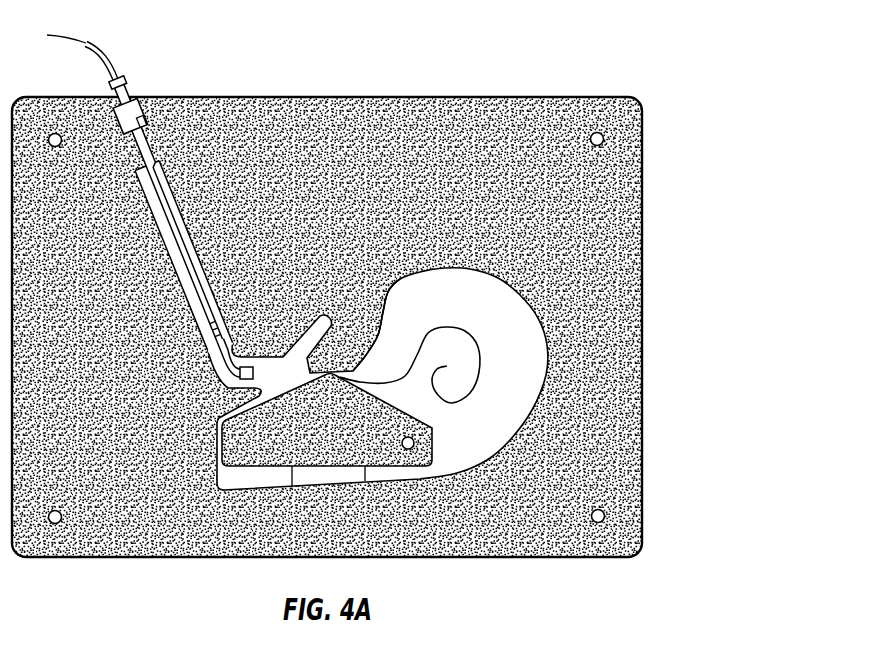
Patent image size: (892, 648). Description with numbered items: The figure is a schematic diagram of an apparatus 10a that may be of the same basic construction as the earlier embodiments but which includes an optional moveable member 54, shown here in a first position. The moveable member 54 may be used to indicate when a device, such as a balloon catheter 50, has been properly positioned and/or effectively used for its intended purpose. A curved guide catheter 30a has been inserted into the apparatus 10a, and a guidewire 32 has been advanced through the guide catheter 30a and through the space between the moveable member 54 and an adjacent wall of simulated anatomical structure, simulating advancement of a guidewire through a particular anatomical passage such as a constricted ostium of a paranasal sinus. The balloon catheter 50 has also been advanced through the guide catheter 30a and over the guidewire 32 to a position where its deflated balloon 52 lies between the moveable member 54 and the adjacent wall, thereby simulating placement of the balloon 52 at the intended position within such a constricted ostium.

The apparatus 10a is at (660, 78).
The curved guide catheter 30a is at (132, 118).
The guidewire 32 is at (62, 33).
The balloon catheter 50 is at (108, 58).
The balloon 52 is at (379, 326).
The moveable member 54 is at (422, 467).